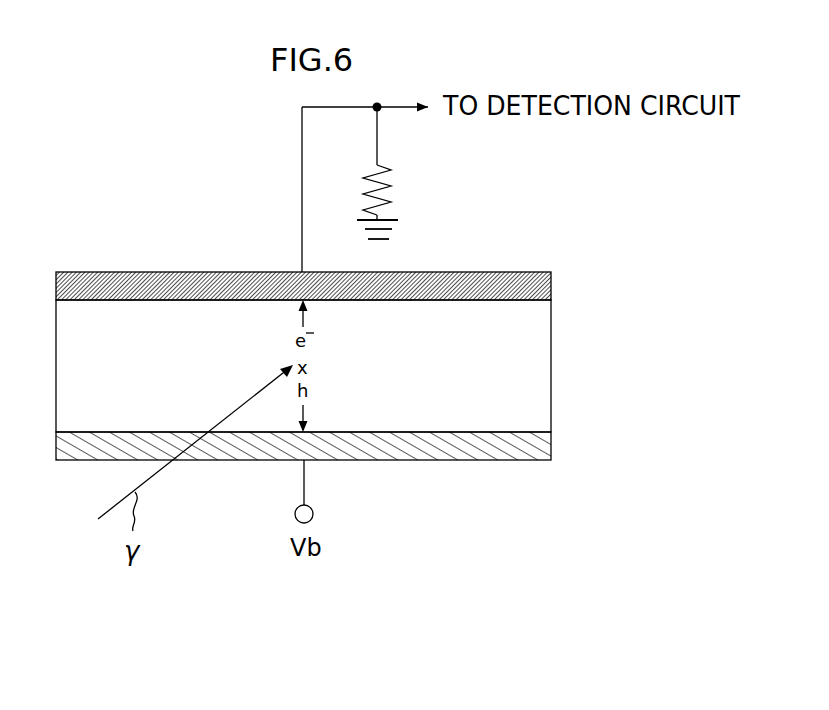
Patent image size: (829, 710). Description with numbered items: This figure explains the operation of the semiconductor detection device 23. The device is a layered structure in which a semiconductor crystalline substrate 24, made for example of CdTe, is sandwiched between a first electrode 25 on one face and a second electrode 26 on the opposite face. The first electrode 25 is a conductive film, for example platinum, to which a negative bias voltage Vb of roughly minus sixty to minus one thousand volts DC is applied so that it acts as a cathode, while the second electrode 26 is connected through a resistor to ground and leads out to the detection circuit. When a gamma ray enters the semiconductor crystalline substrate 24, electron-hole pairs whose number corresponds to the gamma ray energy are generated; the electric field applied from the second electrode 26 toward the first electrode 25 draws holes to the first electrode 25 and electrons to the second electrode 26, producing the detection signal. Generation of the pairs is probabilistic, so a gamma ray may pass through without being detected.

The semiconductor detection device 23 is at (339, 313).
The semiconductor crystalline substrate 24 is at (551, 363).
The first electrode 25 is at (551, 443).
The second electrode 26 is at (551, 283).